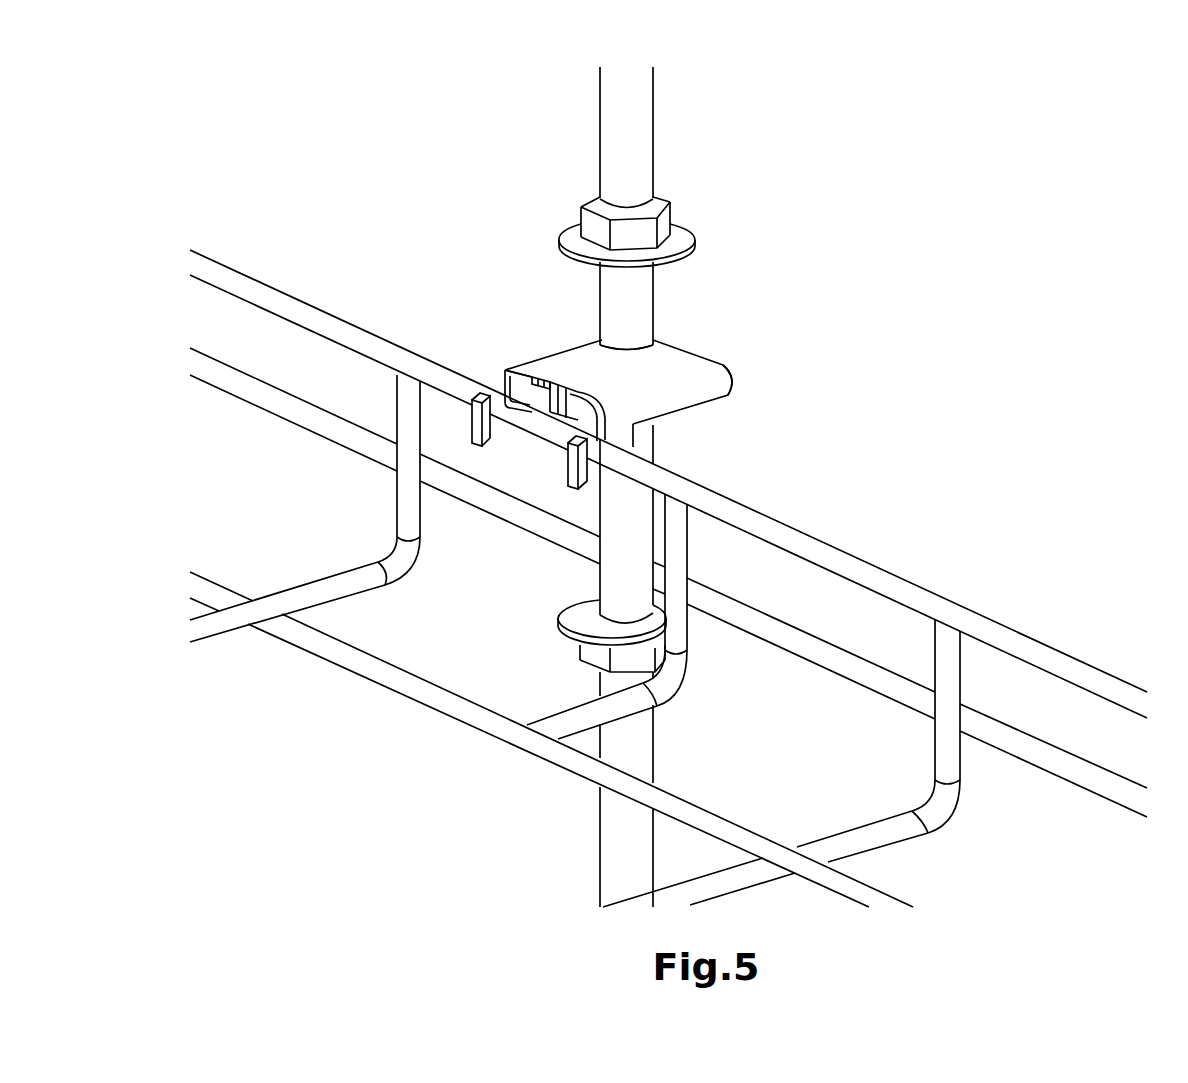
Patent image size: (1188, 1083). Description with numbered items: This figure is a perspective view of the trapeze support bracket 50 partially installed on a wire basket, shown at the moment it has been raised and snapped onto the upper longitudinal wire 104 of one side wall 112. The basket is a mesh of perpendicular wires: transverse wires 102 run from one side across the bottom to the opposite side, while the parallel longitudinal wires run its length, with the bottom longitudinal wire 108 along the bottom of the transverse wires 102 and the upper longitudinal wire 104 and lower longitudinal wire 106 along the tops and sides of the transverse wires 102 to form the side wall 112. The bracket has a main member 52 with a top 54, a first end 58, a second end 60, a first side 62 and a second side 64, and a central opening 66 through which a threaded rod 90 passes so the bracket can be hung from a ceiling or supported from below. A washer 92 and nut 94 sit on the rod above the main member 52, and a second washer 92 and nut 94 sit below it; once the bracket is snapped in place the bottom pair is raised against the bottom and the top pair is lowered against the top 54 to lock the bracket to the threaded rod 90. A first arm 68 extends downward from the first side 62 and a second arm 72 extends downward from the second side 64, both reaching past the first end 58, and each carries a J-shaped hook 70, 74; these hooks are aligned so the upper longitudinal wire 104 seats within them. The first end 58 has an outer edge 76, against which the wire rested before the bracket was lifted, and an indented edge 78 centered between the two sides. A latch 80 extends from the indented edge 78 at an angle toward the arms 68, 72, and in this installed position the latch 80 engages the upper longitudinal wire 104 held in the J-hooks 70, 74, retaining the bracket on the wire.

The trapeze support bracket 50 is at (625, 429).
The main member 52 is at (668, 337).
The top 54 is at (676, 372).
The first end 58 is at (597, 398).
The second end 60 is at (705, 373).
The first side 62 is at (505, 365).
The second side 64 is at (683, 392).
The opening 66 is at (673, 365).
The first arm 68 is at (487, 428).
The J-shaped hook 70 is at (473, 403).
The second arm 72 is at (590, 468).
The J-shaped hook 74 is at (580, 478).
The outer edge 76 is at (533, 380).
The indented edge 78 is at (553, 380).
The latch 80 is at (566, 392).
The threaded rod 90 is at (632, 120).
The washer 92 is at (685, 230).
The nut 94 is at (667, 203).
The transverse wire 102 is at (947, 660).
The upper longitudinal wire 104 is at (790, 540).
The lower longitudinal wire 106 is at (843, 665).
The bottom longitudinal wire 108 is at (735, 830).
The side wall 112 is at (1020, 695).